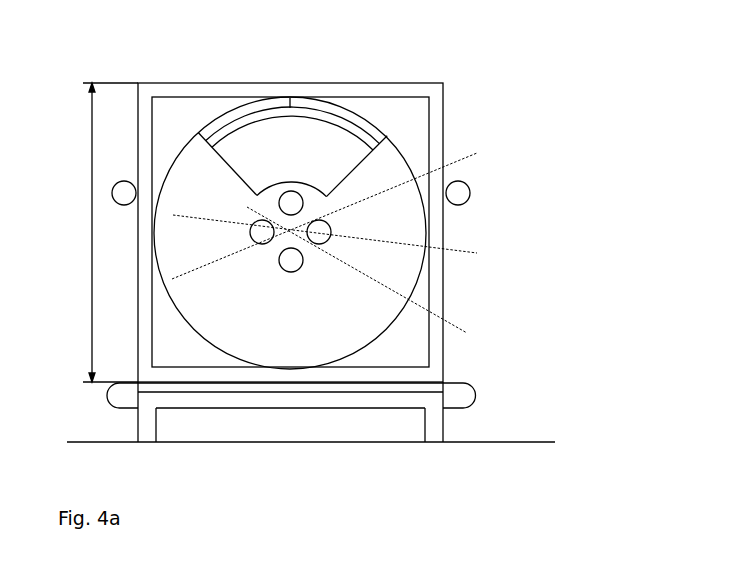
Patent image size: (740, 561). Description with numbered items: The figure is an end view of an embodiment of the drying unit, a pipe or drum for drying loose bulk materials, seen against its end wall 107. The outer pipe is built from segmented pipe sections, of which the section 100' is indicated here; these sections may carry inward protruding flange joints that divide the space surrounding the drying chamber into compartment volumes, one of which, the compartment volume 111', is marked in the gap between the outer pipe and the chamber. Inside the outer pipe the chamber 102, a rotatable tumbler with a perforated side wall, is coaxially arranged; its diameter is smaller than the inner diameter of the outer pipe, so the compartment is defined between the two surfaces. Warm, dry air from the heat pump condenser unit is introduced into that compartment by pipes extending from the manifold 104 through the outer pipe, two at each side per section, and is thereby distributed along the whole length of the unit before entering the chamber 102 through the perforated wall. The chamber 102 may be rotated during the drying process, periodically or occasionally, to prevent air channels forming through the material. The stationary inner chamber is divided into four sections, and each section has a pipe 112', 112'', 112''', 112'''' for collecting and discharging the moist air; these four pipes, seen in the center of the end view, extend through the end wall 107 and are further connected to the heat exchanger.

The segmented pipe section 100' is at (282, 92).
The compartment volume 111' is at (307, 73).
The chamber 102 is at (335, 118).
The manifold 104 is at (112, 193).
The end wall 107 is at (299, 340).
The pipe for collecting and discharging moist air 112' is at (345, 370).
The pipe for collecting and discharging moist air 112'' is at (428, 232).
The pipe for collecting and discharging moist air 112''' is at (149, 254).
The pipe for collecting and discharging moist air 112'''' is at (163, 159).